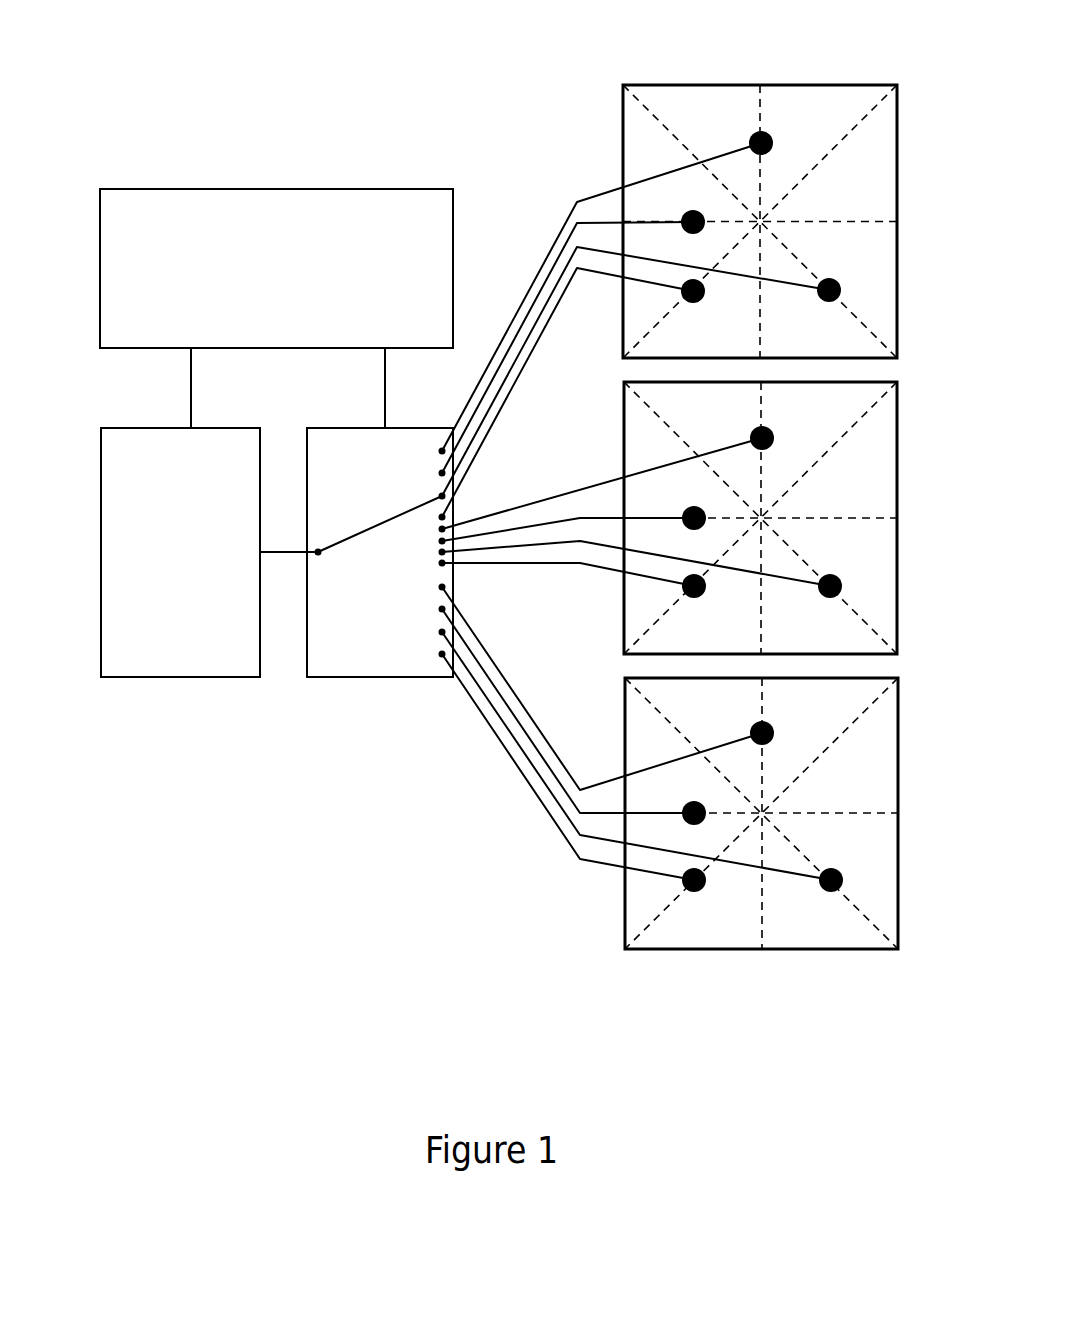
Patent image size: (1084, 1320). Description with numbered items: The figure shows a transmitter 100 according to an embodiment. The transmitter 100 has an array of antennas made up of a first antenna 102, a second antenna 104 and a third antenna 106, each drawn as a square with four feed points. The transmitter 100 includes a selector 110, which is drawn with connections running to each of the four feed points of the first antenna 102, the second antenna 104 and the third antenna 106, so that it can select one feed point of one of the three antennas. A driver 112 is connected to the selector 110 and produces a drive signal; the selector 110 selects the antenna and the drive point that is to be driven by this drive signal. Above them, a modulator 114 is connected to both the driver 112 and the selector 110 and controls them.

The transmitter 100 is at (285, 895).
The first antenna 102 is at (645, 130).
The second antenna 104 is at (657, 450).
The third antenna 106 is at (705, 927).
The selector 110 is at (363, 623).
The driver 112 is at (158, 635).
The modulator 114 is at (236, 212).